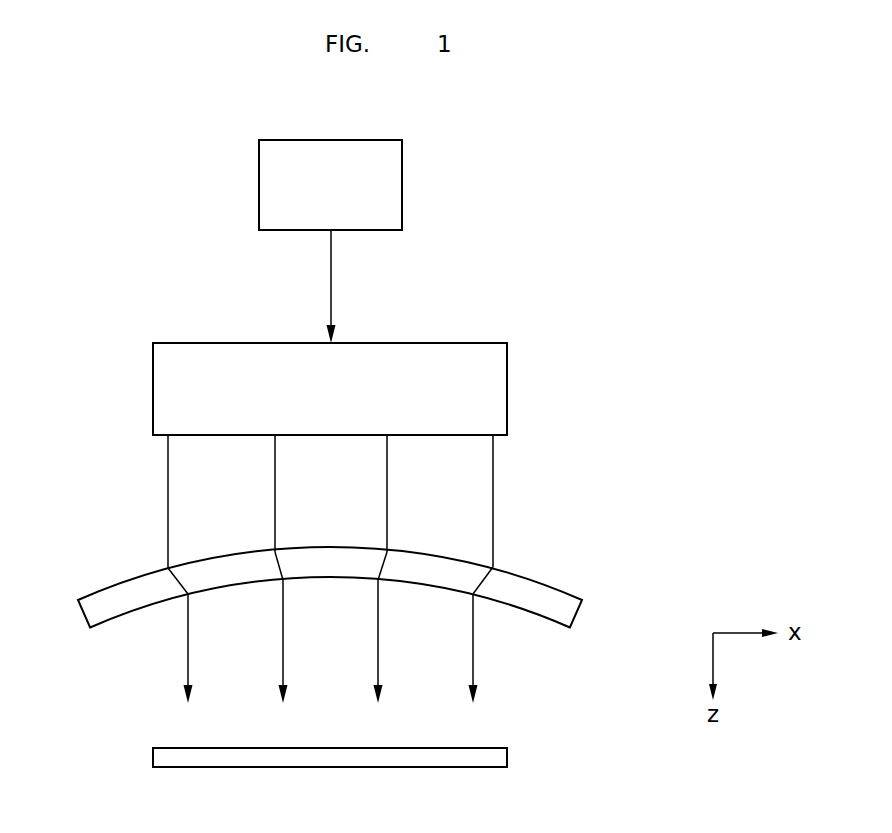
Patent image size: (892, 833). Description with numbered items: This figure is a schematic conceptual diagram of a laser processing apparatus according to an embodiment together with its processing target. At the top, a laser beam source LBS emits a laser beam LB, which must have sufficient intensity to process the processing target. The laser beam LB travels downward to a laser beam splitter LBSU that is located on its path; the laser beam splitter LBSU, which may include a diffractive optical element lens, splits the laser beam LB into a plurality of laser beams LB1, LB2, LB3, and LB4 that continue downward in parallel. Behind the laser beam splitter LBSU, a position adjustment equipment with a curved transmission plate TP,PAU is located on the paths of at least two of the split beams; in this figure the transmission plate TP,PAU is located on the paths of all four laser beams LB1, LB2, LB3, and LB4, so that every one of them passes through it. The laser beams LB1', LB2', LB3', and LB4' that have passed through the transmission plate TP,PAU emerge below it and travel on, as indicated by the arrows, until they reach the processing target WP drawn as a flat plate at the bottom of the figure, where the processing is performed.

The laser beam source LBS is at (402, 186).
The laser beam LB is at (331, 290).
The laser beam splitter LBSU is at (507, 390).
The laser beam LB1 is at (119, 501).
The laser beam LB2 is at (172, 493).
The laser beam LB3 is at (489, 493).
The laser beam LB4 is at (542, 501).
The transmission plate of position adjustment equipment TP,PAU is at (558, 602).
The laser beam LB1' is at (134, 648).
The laser beam LB2' is at (191, 641).
The laser beam LB3' is at (472, 641).
The laser beam LB4' is at (529, 648).
The processing target WP is at (507, 757).